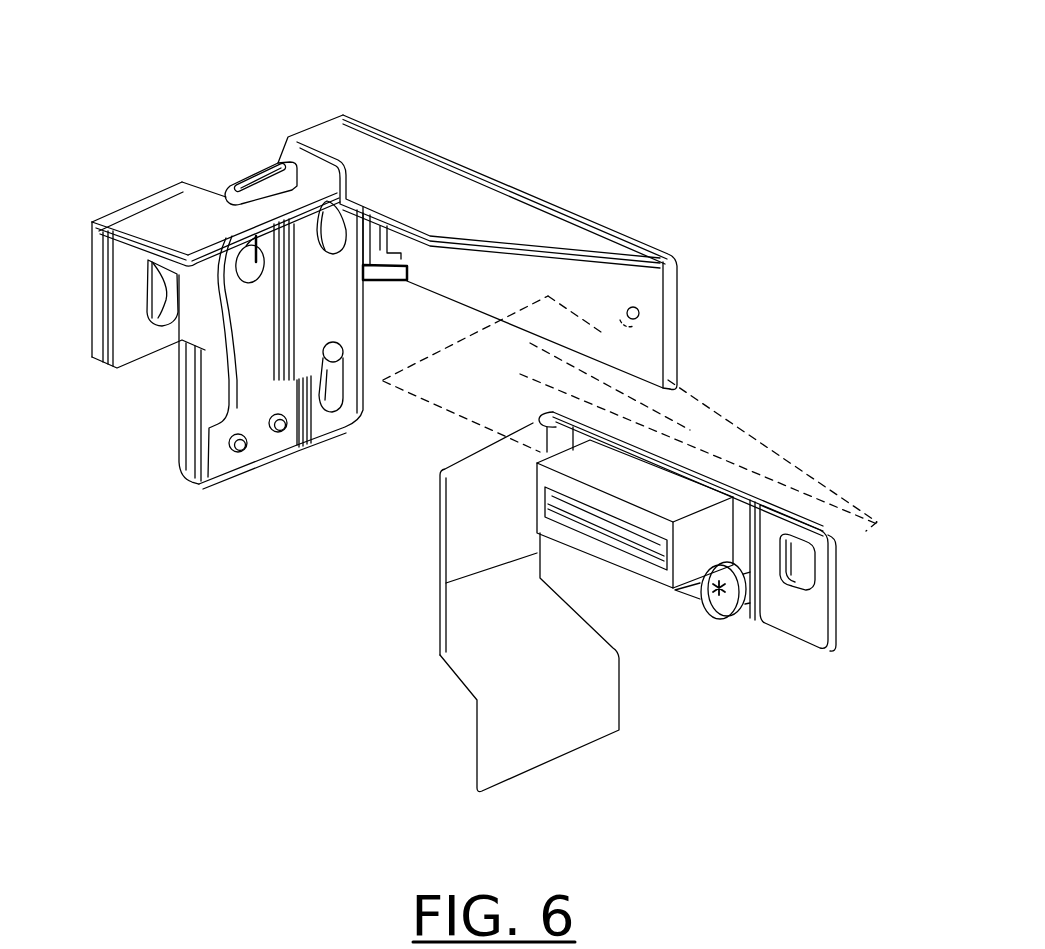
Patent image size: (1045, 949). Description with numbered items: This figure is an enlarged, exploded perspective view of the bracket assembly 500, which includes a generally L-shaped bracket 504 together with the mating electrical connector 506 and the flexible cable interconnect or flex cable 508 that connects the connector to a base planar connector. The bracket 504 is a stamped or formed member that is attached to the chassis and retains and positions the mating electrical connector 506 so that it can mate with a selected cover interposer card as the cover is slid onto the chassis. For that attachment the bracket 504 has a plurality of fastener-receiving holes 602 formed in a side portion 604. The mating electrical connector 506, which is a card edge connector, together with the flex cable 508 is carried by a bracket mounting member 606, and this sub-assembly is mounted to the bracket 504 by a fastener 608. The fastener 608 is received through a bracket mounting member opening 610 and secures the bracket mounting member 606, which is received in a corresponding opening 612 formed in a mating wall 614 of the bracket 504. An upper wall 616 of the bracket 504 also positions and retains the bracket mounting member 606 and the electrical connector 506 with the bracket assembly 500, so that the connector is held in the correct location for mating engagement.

The bracket assembly 500 is at (300, 32).
The bracket 504 is at (440, 315).
The mating electrical connector 506 is at (640, 493).
The flex cable 508 is at (441, 626).
The fastener-receiving holes 602 is at (140, 287).
The side portion 604 is at (153, 320).
The bracket mounting member 606 is at (727, 559).
The fastener 608 is at (717, 610).
The bracket mounting member opening 610 is at (790, 570).
The opening 612 is at (641, 308).
The mating wall 614 is at (640, 343).
The upper wall 616 is at (481, 198).